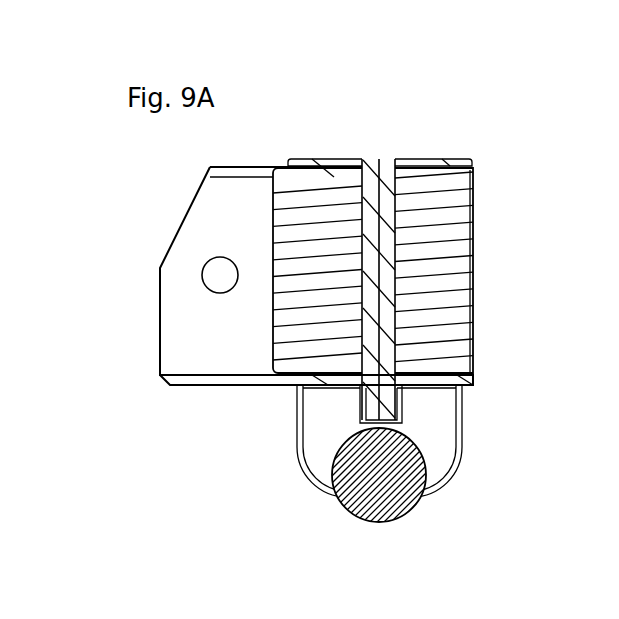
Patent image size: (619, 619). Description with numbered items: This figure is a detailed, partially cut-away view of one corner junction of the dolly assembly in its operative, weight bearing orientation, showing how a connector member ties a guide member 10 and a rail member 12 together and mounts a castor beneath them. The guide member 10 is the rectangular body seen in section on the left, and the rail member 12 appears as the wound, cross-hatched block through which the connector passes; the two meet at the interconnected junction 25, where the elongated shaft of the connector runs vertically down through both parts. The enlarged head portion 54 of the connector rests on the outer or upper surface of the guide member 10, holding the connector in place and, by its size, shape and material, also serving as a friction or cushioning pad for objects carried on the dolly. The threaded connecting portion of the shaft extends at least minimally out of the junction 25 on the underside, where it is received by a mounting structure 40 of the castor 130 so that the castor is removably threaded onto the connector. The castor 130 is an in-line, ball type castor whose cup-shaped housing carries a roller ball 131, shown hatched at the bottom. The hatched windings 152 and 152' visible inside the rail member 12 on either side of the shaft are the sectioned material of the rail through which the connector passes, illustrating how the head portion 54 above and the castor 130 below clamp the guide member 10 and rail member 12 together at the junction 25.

The guide member 10 is at (167, 380).
The rail member 12 is at (477, 202).
The interconnected junction 25 is at (420, 163).
The rod foot / sleeve 40 is at (357, 420).
The enlarged head portion 54 is at (338, 159).
The castor 130 is at (463, 446).
The roller ball 131 is at (383, 512).
The coil winding 152 is at (476, 269).
The coil winding 152' is at (472, 338).